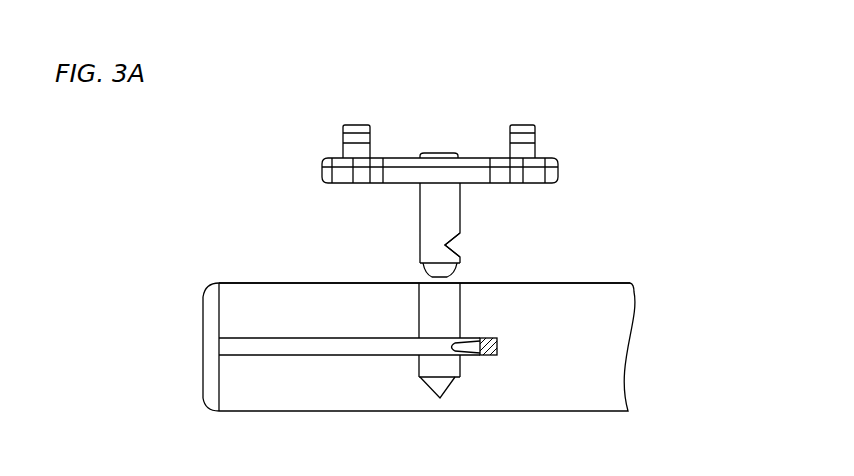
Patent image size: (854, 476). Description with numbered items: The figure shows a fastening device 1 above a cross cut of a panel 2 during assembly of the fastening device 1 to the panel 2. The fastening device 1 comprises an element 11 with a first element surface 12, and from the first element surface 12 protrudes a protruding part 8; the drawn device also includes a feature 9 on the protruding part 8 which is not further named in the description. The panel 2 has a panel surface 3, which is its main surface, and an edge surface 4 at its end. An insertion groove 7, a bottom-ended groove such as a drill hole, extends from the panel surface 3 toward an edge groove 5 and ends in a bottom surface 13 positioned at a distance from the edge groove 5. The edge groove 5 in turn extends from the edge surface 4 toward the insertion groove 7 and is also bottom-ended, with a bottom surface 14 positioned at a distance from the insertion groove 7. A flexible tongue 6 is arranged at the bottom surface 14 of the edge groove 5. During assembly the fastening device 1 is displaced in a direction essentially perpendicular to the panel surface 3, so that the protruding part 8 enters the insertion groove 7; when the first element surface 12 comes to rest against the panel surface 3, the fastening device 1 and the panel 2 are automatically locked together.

The fastening device 1 is at (465, 185).
The panel 2 is at (473, 339).
The panel surface 3 is at (600, 283).
The edge surface 4 is at (602, 475).
The edge groove 5 is at (336, 338).
The flexible tongue 6 is at (467, 348).
The insertion groove 7 is at (428, 322).
The protruding part 8 is at (460, 212).
The notch 9 is at (458, 247).
The element 11 is at (545, 155).
The first element surface 12 is at (372, 183).
The bottom surface of the insertion groove 13 is at (430, 398).
The bottom surface of the edge groove 14 is at (497, 350).